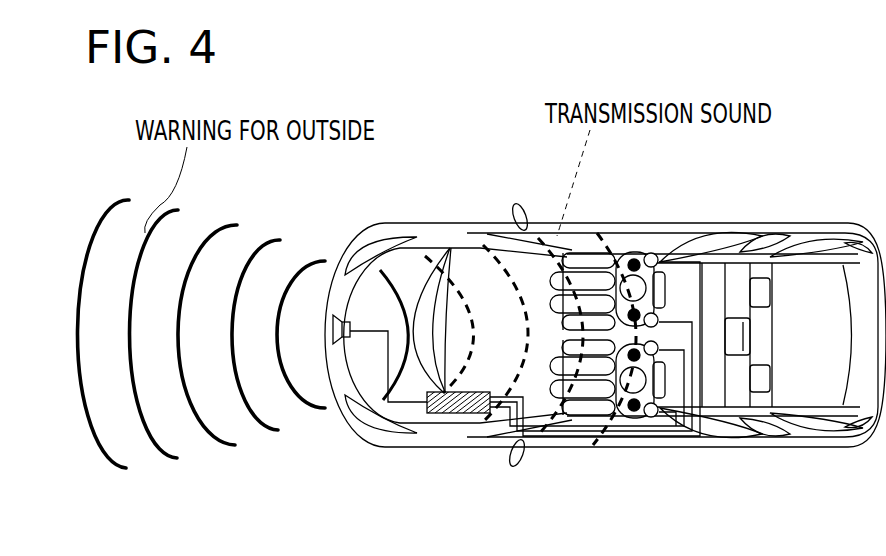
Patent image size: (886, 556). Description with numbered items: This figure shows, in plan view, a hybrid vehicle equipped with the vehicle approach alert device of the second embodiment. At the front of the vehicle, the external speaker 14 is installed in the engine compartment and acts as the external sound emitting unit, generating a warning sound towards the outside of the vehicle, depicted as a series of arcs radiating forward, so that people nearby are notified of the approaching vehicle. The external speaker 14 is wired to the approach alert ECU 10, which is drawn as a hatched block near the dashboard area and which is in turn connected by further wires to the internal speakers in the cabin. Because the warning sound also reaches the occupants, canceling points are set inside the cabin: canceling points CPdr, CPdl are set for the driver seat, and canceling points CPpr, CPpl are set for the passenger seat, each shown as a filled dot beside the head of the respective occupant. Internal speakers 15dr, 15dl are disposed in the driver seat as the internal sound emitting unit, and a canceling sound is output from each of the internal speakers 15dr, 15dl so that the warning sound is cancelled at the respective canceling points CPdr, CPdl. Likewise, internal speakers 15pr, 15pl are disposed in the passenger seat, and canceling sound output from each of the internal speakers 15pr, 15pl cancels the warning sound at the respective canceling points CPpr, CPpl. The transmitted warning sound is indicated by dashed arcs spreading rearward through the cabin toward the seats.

The external speaker 14 is at (345, 320).
The approach alert ECU 10 is at (470, 415).
The canceling point CPdr is at (634, 258).
The canceling point CPdl is at (630, 308).
The canceling point CPpr is at (628, 362).
The canceling point CPpl is at (633, 412).
The internal speaker 15dr is at (660, 259).
The internal speaker 15dl is at (661, 320).
The internal speaker 15pr is at (660, 350).
The internal speaker 15pl is at (660, 412).